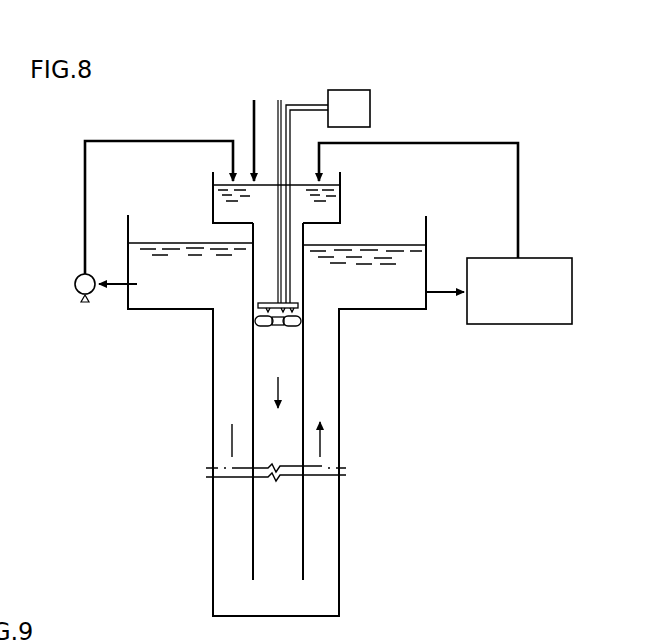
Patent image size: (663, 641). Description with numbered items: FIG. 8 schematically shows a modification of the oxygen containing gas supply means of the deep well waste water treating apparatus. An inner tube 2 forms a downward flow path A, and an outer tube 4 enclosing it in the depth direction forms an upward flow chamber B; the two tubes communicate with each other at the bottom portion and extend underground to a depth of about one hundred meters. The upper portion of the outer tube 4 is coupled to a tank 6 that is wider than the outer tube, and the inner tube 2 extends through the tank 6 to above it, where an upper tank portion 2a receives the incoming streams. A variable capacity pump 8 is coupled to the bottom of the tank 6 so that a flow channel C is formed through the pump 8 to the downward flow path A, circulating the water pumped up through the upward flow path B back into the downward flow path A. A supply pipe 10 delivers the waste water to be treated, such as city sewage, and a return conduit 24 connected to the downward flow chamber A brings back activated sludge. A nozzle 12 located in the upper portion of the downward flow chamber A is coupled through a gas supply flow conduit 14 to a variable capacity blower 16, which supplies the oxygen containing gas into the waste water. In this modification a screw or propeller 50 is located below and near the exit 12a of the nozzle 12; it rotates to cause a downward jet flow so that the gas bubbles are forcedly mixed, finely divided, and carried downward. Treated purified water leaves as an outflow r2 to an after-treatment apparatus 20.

The inner tube 2 is at (304, 525).
The upper tank 2a is at (341, 195).
The outer tube 4 is at (341, 395).
The tank 6 is at (388, 312).
The pump 8 is at (76, 292).
The supply pipe 10 is at (254, 108).
The nozzle 12 is at (269, 301).
The exit of nozzle 12a is at (255, 321).
The gas supply flow conduit 14 is at (293, 105).
The variable capacity blower 16 is at (371, 108).
The after-treatment apparatus 20 is at (515, 325).
The return conduit 24 is at (466, 145).
The screw or propeller 50 is at (299, 327).
The downward flow path A is at (275, 392).
The upward flow path B is at (323, 441).
The flow channel C is at (88, 179).
The outflow r2 is at (448, 298).